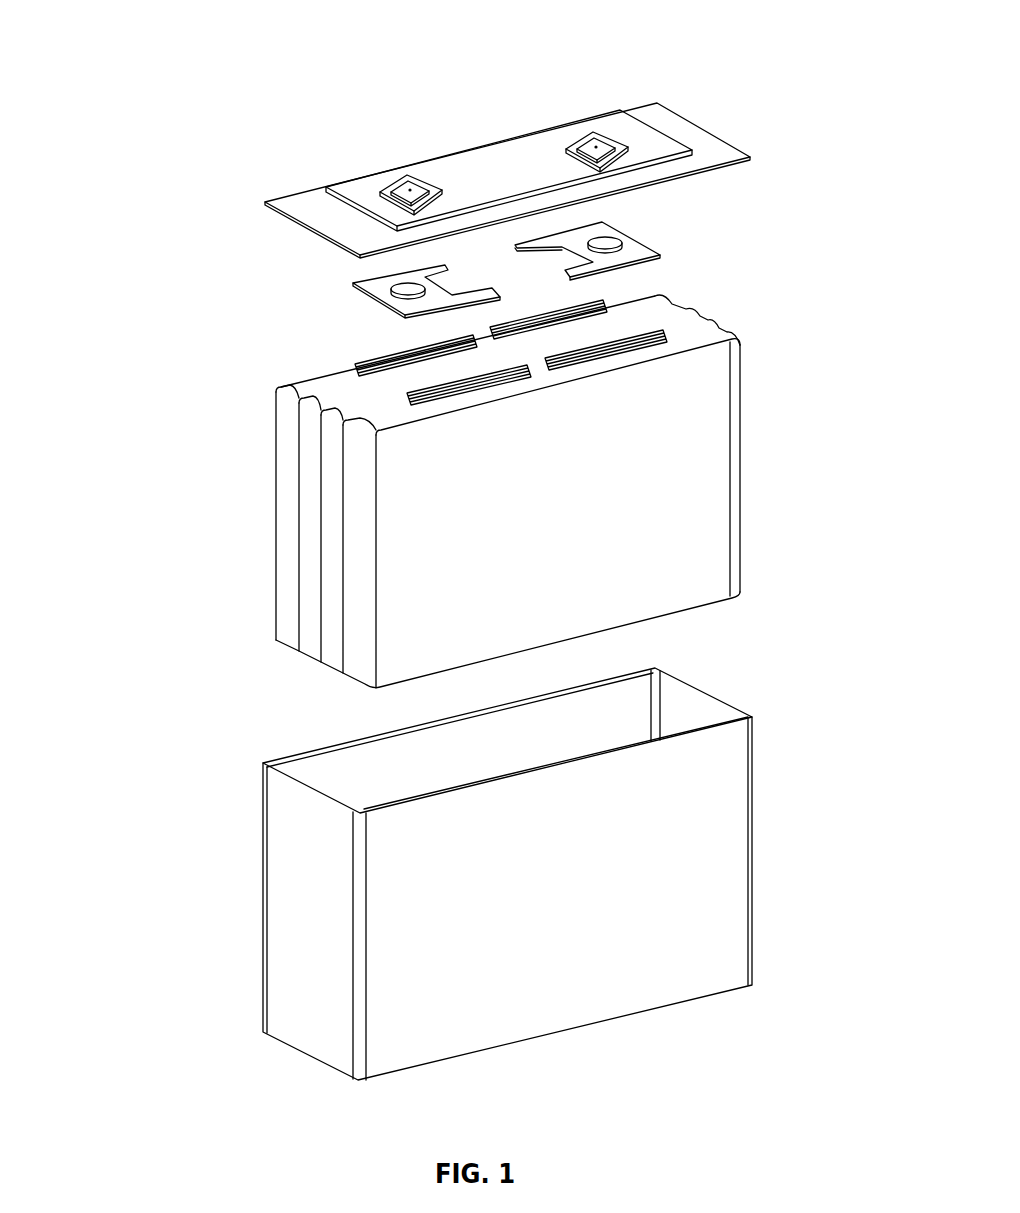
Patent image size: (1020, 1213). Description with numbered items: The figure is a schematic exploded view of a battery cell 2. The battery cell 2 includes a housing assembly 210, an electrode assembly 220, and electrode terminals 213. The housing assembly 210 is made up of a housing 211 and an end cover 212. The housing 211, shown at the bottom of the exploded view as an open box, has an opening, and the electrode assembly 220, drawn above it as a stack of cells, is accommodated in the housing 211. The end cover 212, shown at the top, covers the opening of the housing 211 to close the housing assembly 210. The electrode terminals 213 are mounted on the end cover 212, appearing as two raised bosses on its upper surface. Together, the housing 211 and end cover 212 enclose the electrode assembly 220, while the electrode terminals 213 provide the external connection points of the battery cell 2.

The battery cell 2 is at (665, 40).
The housing assembly 210 is at (117, 805).
The housing 211 is at (732, 864).
The end cover 212 is at (256, 196).
The electrode terminals 213 is at (402, 178).
The electrode assembly 220 is at (763, 498).